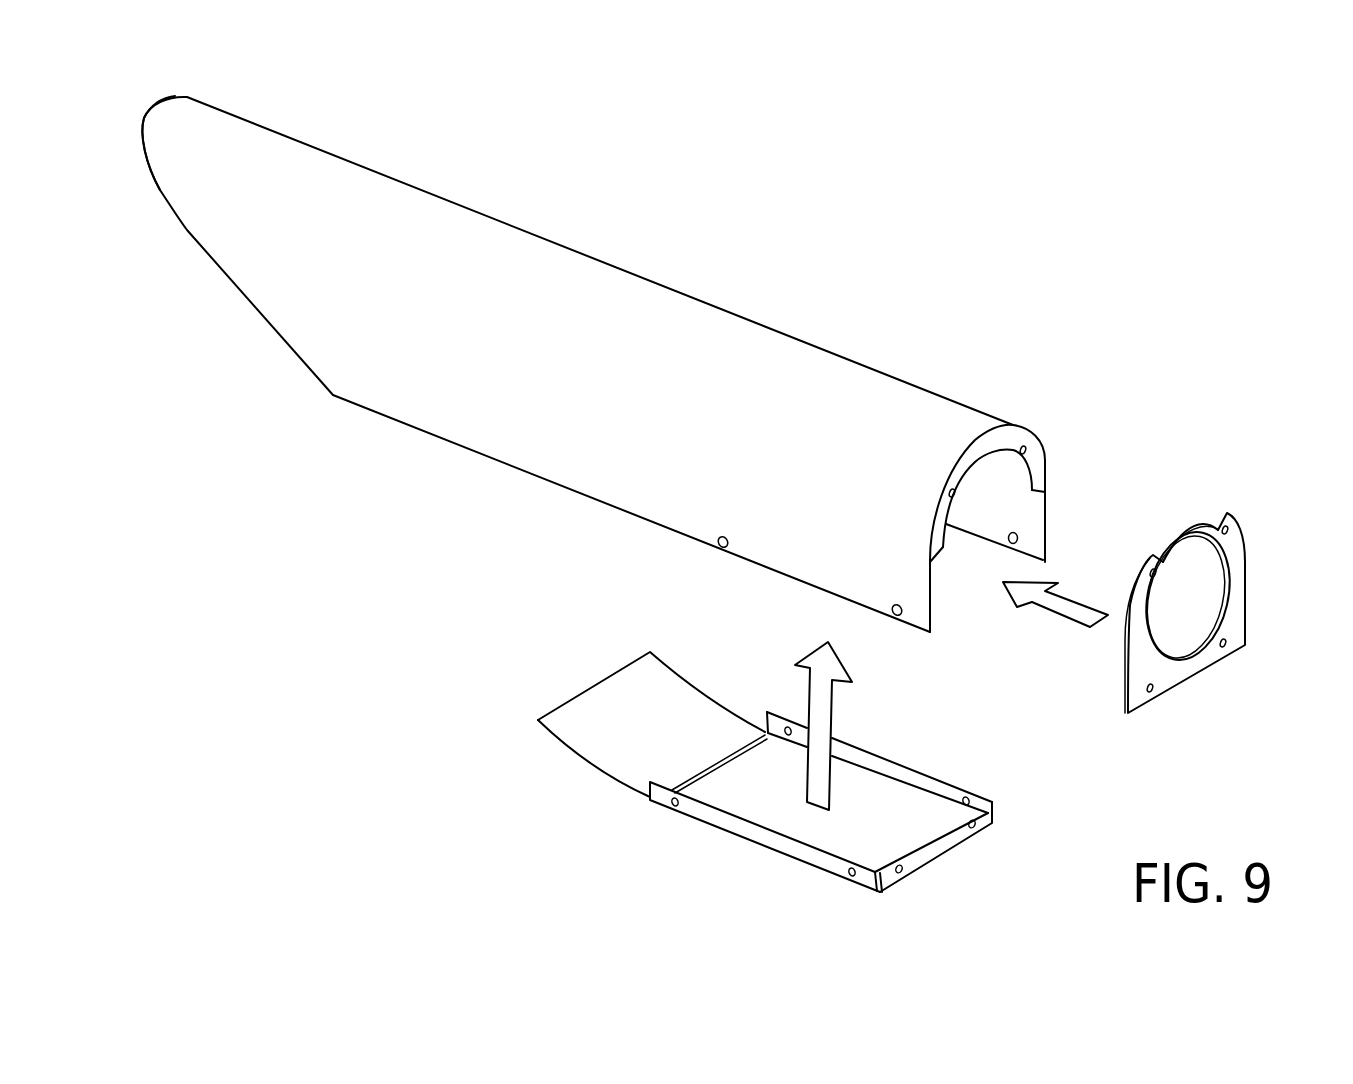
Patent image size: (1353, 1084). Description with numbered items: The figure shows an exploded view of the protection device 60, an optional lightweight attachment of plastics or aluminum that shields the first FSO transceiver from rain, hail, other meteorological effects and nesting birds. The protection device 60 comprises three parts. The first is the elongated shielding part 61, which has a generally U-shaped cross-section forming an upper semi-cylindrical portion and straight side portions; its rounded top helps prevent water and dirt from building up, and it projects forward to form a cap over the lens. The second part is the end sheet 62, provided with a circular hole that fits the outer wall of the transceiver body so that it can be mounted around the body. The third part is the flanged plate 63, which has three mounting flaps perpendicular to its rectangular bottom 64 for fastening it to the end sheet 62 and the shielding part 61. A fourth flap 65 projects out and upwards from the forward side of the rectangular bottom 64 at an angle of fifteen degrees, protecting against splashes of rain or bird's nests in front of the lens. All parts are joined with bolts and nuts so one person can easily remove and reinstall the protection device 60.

The protection device 60 is at (727, 254).
The elongated shielding part 61 is at (223, 197).
The end sheet 62 is at (1148, 667).
The flanged plate 63 is at (823, 858).
The rectangular bottom 64 is at (745, 788).
The fourth flap 65 is at (622, 699).